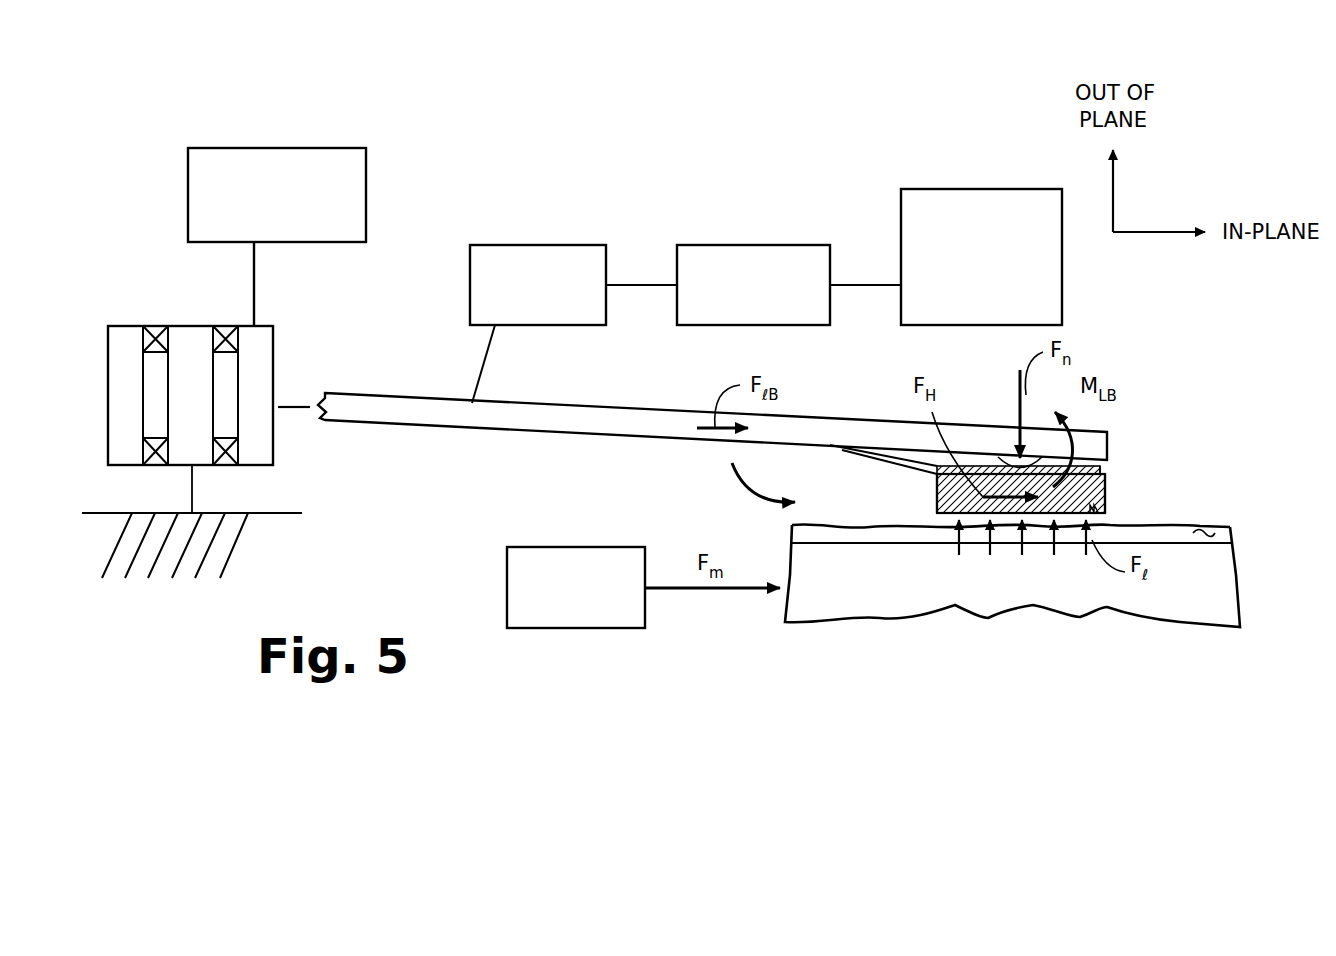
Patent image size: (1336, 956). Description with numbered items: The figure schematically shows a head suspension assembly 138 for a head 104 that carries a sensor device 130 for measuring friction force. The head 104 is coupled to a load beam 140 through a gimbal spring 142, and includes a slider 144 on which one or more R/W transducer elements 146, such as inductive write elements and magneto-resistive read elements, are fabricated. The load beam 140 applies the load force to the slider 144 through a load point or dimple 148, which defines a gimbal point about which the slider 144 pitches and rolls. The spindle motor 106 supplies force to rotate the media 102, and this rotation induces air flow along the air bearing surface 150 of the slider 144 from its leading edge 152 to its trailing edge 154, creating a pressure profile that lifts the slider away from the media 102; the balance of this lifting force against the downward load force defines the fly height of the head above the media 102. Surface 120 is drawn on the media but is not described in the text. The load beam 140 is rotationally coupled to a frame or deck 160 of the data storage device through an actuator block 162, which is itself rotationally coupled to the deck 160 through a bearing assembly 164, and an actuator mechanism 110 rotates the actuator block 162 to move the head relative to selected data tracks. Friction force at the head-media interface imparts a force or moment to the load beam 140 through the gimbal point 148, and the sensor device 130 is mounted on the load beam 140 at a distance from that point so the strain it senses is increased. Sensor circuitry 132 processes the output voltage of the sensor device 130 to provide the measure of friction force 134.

The media 102 is at (1238, 553).
The head 104 is at (1147, 480).
The spindle motor 106 is at (578, 547).
The actuator mechanism 110 is at (298, 148).
The disk surface 120 is at (1205, 528).
The sensor device 130 is at (540, 245).
The sensor circuitry 132 is at (763, 245).
The measure of friction force 134 is at (993, 189).
The head suspension assembly 138 is at (1236, 370).
The load beam 140 is at (595, 418).
The gimbal spring 142 is at (1087, 468).
The slider 144 is at (957, 485).
The R/W transducer elements 146 is at (1108, 483).
The load point or dimple 148 is at (993, 468).
The air bearing surface 150 is at (937, 513).
The leading edge 152 is at (937, 494).
The trailing edge 154 is at (1105, 508).
The frame or deck 160 is at (232, 555).
The actuator block 162 is at (265, 330).
The bearing assembly 164 is at (155, 330).